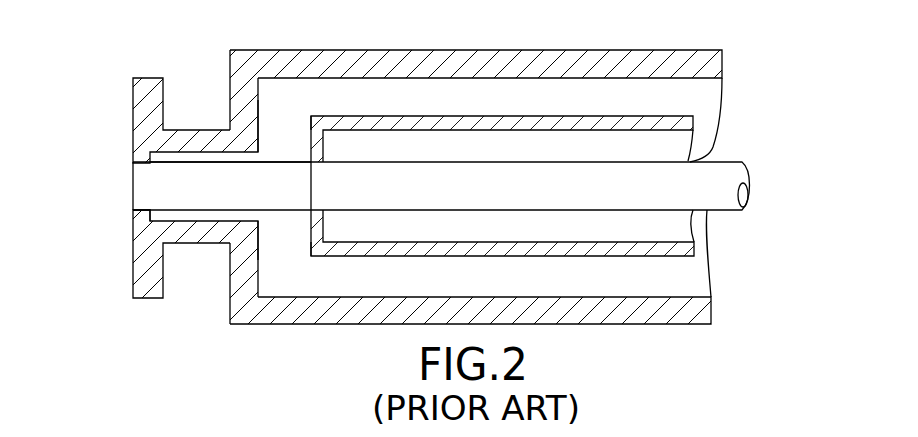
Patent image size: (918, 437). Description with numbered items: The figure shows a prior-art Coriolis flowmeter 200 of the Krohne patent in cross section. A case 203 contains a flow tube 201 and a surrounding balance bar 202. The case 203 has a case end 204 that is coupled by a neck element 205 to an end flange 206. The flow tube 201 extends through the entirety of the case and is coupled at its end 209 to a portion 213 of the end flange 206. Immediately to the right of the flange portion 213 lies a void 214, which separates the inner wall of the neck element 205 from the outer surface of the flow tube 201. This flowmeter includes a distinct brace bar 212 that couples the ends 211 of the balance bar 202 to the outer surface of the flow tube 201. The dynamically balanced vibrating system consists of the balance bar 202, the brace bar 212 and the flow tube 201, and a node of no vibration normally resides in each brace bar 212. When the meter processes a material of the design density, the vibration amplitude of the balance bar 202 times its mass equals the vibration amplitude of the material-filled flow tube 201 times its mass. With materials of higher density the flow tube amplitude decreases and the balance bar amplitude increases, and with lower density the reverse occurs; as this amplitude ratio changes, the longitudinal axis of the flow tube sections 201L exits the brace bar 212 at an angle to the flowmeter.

The Coriolis flowmeter 200 is at (247, 33).
The flow tube 201 is at (720, 197).
The flow tube sections 201L is at (245, 203).
The balance bar 202 is at (454, 116).
The case 203 is at (722, 50).
The case end 204 is at (230, 67).
The neck element 205 is at (200, 245).
The end flange 206 is at (113, 90).
The flow tube end 209 is at (133, 193).
The balance bar ends 211 is at (317, 116).
The brace bar 212 is at (312, 146).
The end flange portion 213 is at (133, 218).
The void 214 is at (258, 215).